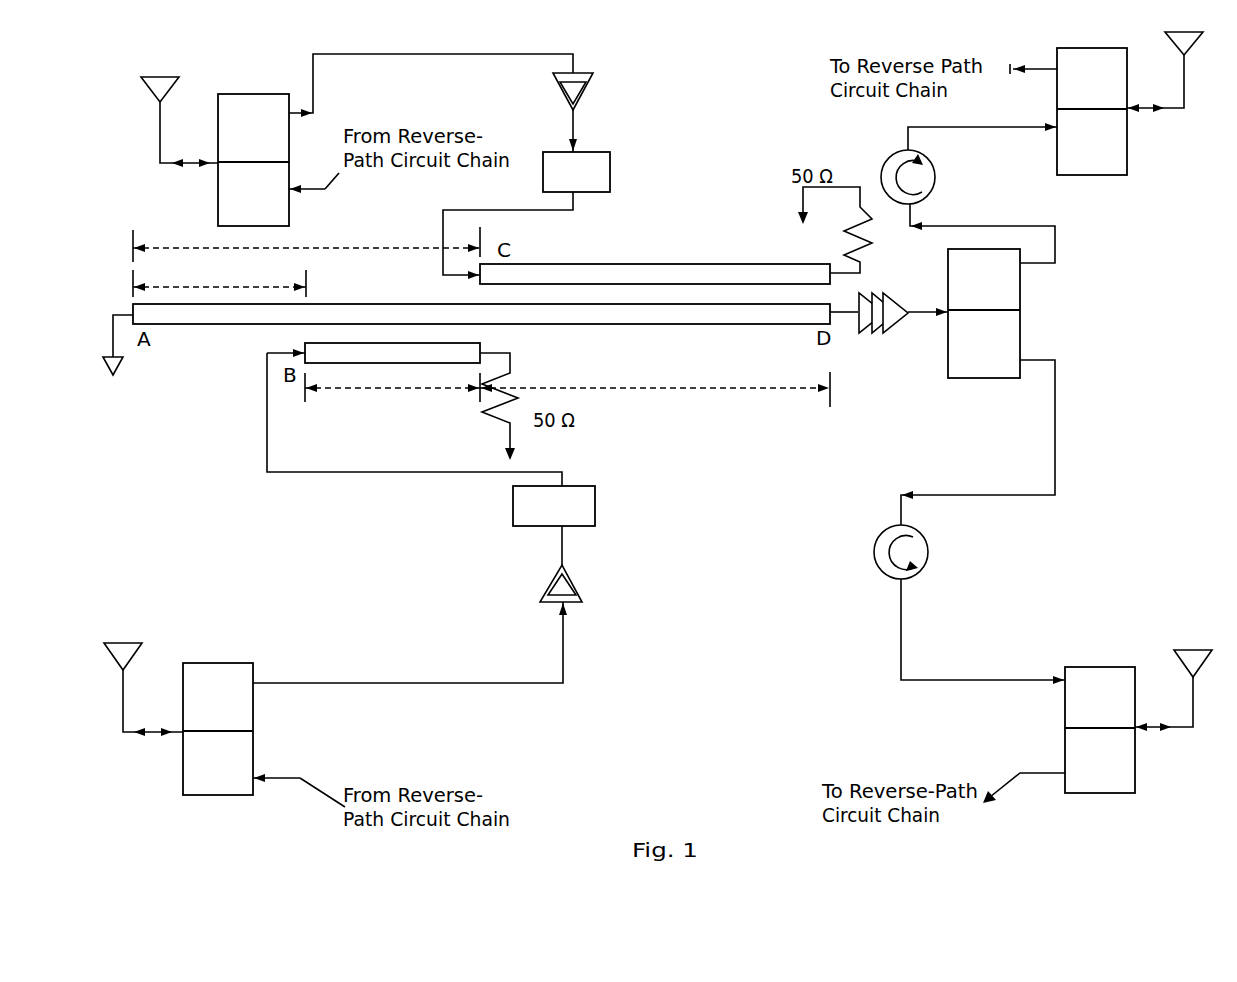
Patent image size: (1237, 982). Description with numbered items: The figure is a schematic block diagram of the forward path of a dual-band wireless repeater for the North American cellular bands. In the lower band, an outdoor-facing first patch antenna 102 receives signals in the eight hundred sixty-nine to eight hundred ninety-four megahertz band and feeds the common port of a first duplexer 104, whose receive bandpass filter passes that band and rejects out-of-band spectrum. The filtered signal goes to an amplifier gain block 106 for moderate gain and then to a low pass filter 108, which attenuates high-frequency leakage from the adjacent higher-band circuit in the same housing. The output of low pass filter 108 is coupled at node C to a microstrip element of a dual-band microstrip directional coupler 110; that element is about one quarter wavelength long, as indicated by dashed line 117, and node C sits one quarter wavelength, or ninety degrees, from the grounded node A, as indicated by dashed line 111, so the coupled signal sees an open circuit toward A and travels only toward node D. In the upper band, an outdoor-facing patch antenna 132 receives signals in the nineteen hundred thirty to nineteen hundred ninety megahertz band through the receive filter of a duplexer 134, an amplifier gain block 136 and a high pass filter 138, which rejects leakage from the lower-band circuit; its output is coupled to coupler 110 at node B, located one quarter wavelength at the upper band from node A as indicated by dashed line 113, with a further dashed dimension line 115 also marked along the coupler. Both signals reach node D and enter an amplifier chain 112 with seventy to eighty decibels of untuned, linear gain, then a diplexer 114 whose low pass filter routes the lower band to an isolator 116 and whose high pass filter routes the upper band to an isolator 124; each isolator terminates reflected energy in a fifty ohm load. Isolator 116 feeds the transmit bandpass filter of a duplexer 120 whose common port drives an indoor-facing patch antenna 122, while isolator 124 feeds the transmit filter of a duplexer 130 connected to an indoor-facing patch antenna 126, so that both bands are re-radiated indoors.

The first patch antenna 102 is at (145, 78).
The first duplexer 104 is at (280, 102).
The amplifier gain block 106 is at (598, 77).
The low pass filter 108 is at (600, 165).
The dual-band microstrip directional coupler 110 is at (667, 243).
The dashed line 111 is at (362, 247).
The amplifier chain 112 is at (883, 332).
The dashed line 113 is at (170, 283).
The diplexer 114 is at (1022, 317).
The coupled transmission line section 115 is at (377, 393).
The isolator 116 is at (885, 167).
The dashed line 117 is at (743, 392).
The duplexer 120 is at (1132, 152).
The patch antenna 122 is at (1200, 48).
The isolator 124 is at (875, 537).
The patch antenna 126 is at (1197, 647).
The duplexer 130 is at (1140, 752).
The patch antenna 132 is at (113, 638).
The duplexer 134 is at (177, 752).
The amplifier gain block 136 is at (587, 598).
The high pass filter 138 is at (598, 497).